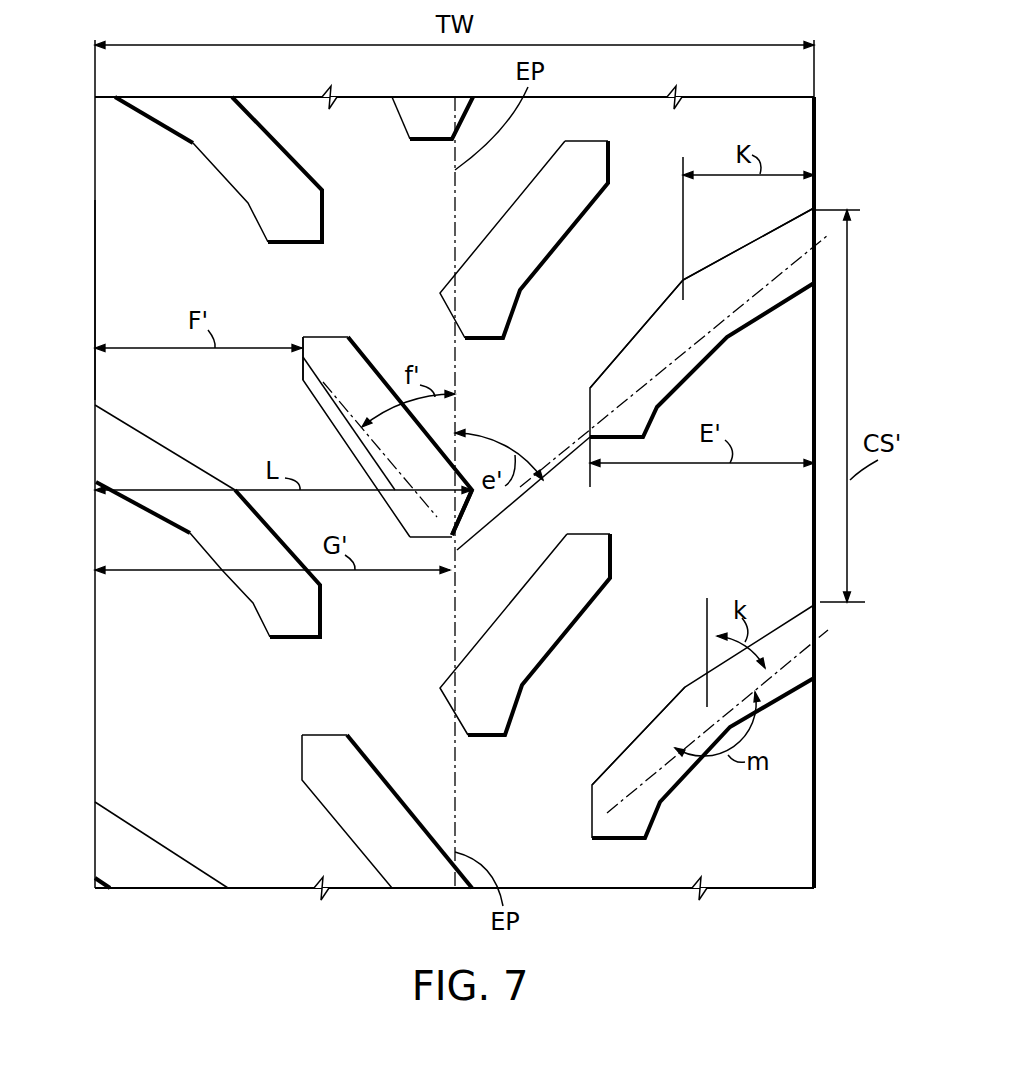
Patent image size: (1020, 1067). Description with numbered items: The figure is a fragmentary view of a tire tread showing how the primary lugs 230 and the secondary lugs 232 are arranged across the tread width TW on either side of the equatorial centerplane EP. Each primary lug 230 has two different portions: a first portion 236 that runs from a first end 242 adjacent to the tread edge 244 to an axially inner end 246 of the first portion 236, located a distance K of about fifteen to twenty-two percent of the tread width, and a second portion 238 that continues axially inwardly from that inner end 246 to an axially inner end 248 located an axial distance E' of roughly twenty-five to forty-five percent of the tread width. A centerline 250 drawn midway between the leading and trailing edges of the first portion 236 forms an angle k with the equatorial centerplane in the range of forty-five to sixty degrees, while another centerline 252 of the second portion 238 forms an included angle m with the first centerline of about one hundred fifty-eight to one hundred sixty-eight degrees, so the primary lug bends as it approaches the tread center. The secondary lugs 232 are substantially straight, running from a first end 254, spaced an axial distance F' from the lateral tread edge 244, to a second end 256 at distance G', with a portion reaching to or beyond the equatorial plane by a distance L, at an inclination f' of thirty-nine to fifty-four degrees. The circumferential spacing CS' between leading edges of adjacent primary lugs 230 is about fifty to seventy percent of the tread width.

The primary lugs 230 is at (258, 185).
The secondary lugs 232 is at (498, 254).
The first portion 236 is at (753, 260).
The second portion 238 is at (667, 330).
The first end 242 is at (814, 283).
The tread edge 244 is at (814, 357).
The axially inner end of the first portion 246 is at (683, 287).
The axially inner end 248 is at (590, 437).
The centerline 250 is at (803, 648).
The centerline 252 is at (637, 782).
The first end 254 is at (303, 370).
The second end 256 is at (452, 538).